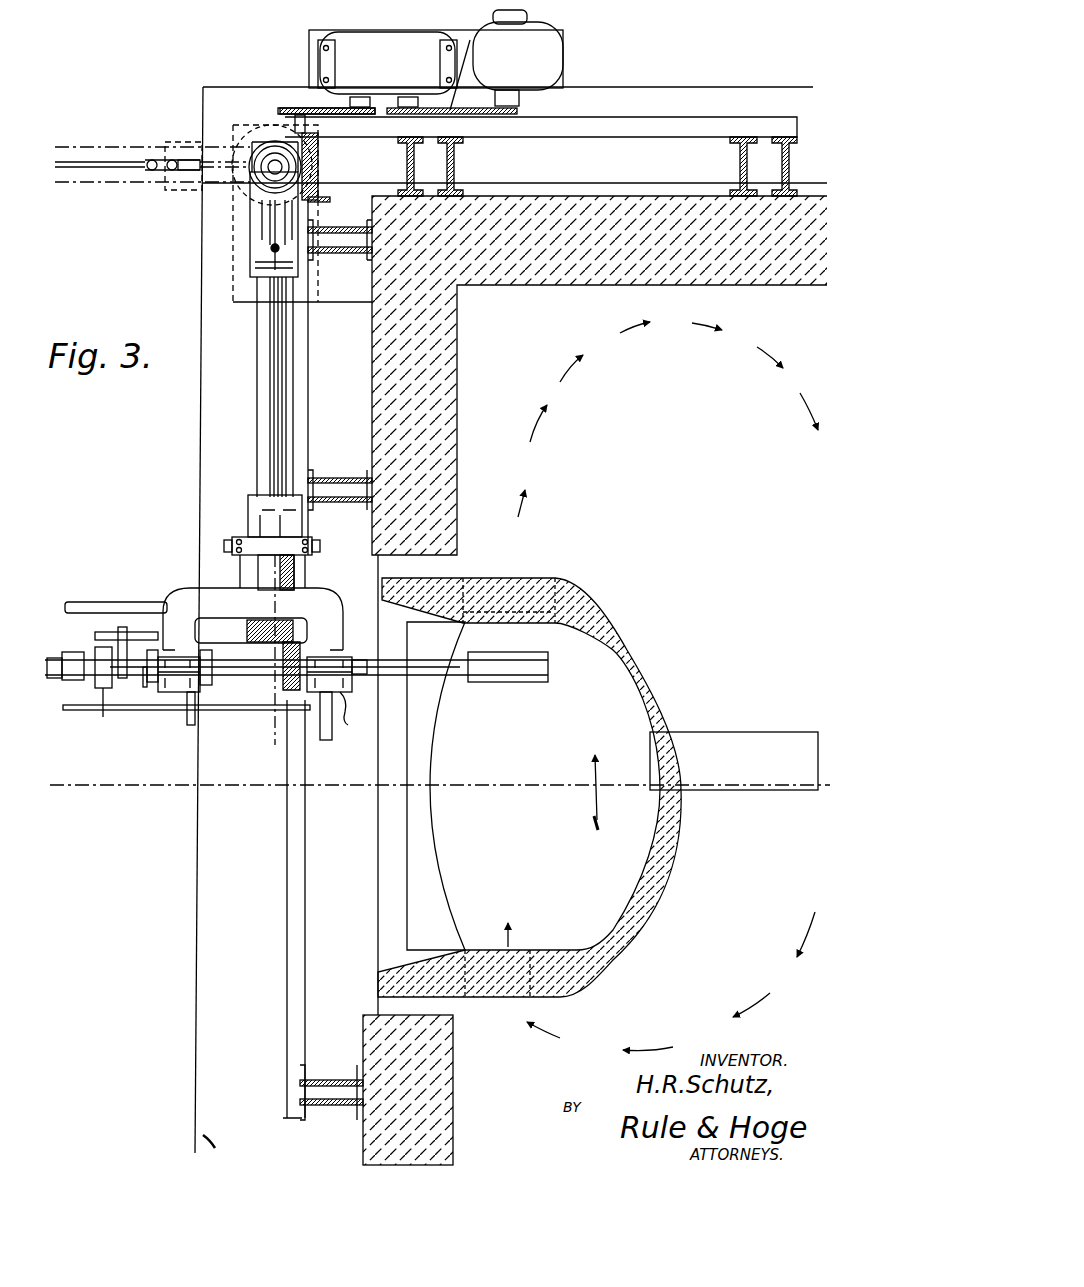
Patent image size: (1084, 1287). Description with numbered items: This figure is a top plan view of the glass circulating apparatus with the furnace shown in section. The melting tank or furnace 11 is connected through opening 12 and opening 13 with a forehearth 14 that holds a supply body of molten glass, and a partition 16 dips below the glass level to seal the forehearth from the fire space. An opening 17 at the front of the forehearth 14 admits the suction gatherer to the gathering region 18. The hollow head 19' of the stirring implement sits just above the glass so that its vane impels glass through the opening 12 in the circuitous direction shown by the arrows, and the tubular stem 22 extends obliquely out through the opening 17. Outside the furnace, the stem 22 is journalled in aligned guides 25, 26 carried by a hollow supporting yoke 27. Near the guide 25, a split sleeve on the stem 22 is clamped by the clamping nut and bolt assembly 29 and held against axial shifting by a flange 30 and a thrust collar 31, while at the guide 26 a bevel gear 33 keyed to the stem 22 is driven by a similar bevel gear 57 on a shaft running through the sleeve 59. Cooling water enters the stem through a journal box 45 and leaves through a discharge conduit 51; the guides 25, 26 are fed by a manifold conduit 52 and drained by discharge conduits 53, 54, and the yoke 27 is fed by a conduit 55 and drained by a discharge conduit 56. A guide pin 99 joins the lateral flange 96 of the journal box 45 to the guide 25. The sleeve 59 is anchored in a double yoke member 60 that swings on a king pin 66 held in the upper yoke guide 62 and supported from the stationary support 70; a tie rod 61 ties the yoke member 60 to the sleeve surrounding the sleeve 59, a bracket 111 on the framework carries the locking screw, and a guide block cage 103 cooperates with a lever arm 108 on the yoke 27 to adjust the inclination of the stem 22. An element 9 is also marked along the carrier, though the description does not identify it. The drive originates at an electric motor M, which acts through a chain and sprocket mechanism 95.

The electric motor M is at (563, 52).
The chain and sprocket mechanism 95 is at (320, 118).
The king pin 66 is at (270, 160).
The upper yoke guide 62 is at (260, 157).
The stationary support 70 is at (318, 175).
The double yoke member 60 is at (178, 190).
The sleeve 59 is at (98, 148).
The tie rod 61 is at (272, 352).
The tube 9 is at (298, 446).
The bracket 111 is at (302, 482).
The guide block cage 103 is at (296, 545).
The lever arm 108 is at (298, 572).
The hollow supporting yoke 27 is at (212, 596).
The conduit 55 is at (95, 604).
The lateral flange 96 is at (125, 627).
The guide pin 99 is at (118, 636).
The bevel gear 57 is at (258, 645).
The tubular stem 22 is at (225, 662).
The guide 26 is at (345, 660).
The thrust collar 31 is at (210, 680).
The guide 25 is at (195, 690).
The journal box 45 is at (95, 690).
The discharge conduit 51 is at (103, 716).
The flange 30 is at (150, 682).
The clamping nut and bolt assembly 29 is at (152, 688).
The manifold conduit 52 is at (228, 712).
The bevel gear 33 is at (290, 692).
The discharge conduit 53 is at (191, 728).
The discharge conduit 54 is at (346, 720).
The discharge conduit 56 is at (327, 745).
The opening 12 is at (548, 578).
The forehearth 14 is at (620, 692).
The partition 16 is at (670, 836).
The opening 13 is at (465, 990).
The opening 17 is at (415, 913).
The gathering region 18 is at (527, 803).
The hollow head 19' is at (519, 661).
The melting tank or furnace 11 is at (729, 622).